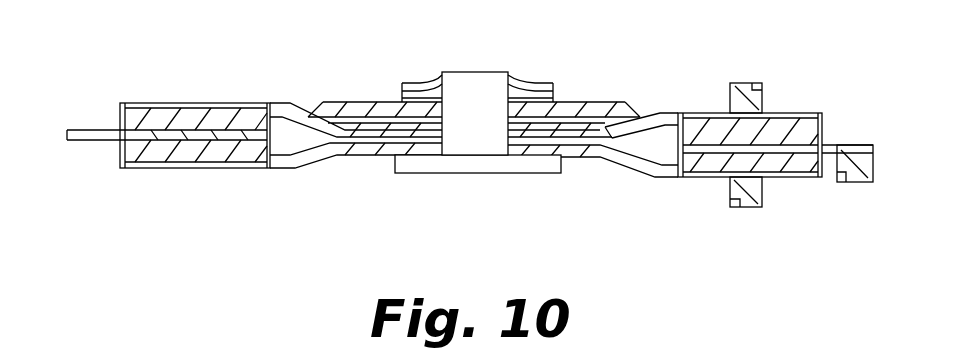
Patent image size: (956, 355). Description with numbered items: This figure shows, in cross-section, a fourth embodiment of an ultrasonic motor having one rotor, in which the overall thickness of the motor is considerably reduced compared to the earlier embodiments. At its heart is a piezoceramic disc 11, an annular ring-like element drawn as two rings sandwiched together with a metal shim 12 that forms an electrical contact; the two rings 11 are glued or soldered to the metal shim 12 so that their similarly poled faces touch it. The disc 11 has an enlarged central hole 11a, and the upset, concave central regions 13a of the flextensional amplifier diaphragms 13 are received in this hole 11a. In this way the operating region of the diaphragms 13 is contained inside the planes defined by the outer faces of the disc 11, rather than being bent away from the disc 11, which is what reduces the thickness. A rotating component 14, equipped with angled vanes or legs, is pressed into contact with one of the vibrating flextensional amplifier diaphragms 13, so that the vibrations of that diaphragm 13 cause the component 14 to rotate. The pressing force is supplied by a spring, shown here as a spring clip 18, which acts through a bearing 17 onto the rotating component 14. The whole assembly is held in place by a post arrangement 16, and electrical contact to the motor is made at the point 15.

The piezoceramic disc 11 is at (147, 120).
The enlarged central hole 11a is at (658, 147).
The metal shim 12 is at (86, 139).
The flextensional amplifier diaphragm 13 is at (273, 103).
The upset concave central region 13a is at (582, 157).
The rotating component 14 is at (622, 112).
The electrical contact point 15 is at (733, 194).
The post arrangement 16 is at (465, 140).
The bearing 17 is at (555, 94).
The spring clip 18 is at (423, 72).